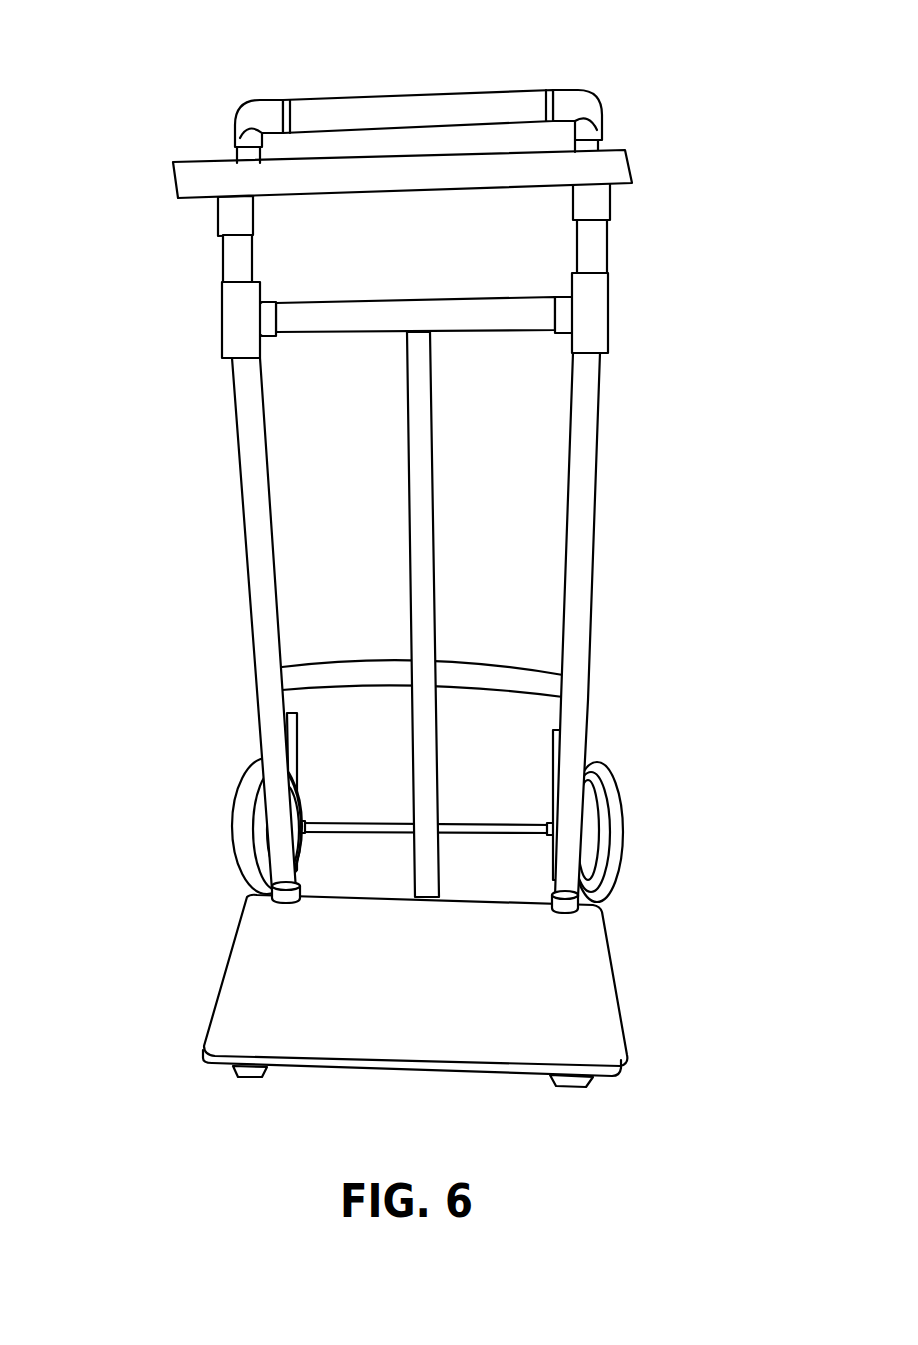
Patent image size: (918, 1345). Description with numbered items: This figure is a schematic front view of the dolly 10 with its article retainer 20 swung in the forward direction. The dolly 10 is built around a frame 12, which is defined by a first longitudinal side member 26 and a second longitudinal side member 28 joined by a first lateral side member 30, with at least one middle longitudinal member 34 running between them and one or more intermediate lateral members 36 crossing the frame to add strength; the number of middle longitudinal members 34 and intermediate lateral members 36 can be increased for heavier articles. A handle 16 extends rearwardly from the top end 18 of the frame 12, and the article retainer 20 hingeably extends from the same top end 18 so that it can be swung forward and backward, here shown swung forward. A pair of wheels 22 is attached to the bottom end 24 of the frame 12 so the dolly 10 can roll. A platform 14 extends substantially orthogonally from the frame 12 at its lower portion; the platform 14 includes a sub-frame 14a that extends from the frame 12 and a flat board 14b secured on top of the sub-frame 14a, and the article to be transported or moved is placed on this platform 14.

The dolly 10 is at (185, 40).
The frame 12 is at (578, 560).
The platform 14 is at (457, 1028).
The sub-frame 14a is at (242, 1078).
The flat board 14b is at (318, 1078).
The handle 16 is at (423, 97).
The top end 18 is at (593, 255).
The article retainer 20 is at (632, 165).
The pair of wheels 22 is at (233, 818).
The bottom end 24 is at (577, 907).
The first longitudinal side member 26 is at (570, 722).
The second longitudinal side member 28 is at (247, 555).
The first lateral side member 30 is at (315, 334).
The middle longitudinal member 34 is at (433, 477).
The intermediate lateral member 36 is at (320, 663).